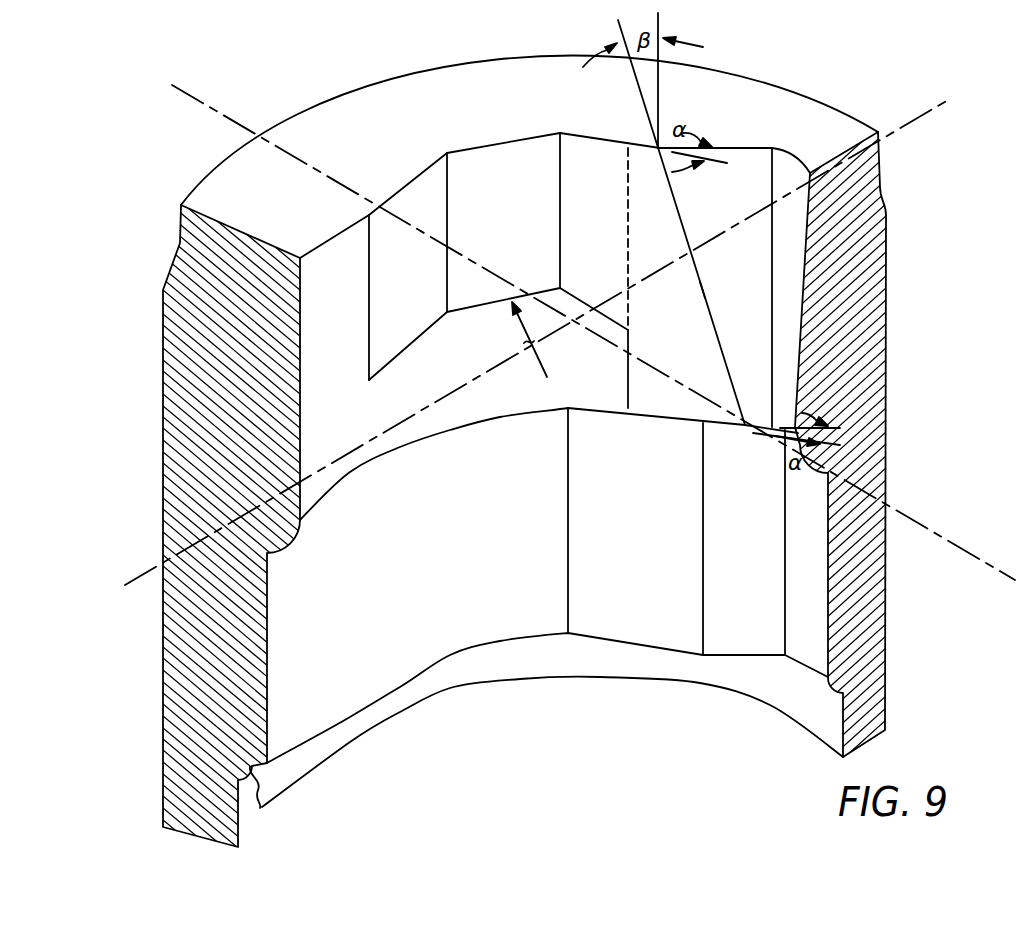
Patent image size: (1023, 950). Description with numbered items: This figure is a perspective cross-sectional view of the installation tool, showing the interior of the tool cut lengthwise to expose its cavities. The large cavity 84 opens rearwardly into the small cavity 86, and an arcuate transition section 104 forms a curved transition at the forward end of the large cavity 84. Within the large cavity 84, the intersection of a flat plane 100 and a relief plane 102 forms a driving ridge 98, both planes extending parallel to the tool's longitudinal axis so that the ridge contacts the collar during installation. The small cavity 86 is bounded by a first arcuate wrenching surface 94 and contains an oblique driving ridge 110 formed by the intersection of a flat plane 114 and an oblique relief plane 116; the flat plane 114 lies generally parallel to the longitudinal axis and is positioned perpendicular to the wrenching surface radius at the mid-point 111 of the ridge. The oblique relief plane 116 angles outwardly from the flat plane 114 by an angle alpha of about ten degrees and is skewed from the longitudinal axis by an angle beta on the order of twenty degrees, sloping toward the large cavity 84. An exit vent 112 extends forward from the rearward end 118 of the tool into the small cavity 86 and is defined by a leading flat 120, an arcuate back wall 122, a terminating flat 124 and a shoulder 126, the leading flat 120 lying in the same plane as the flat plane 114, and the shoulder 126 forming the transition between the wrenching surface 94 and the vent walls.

The large cavity 84 is at (436, 640).
The small cavity 86 is at (333, 262).
The first arcuate wrenching surface 94 is at (485, 408).
The driving ridge 98 is at (700, 638).
The flat plane 100 is at (638, 556).
The relief plane 102 is at (750, 562).
The arcuate transition section 104 is at (260, 808).
The oblique driving ridge 110 is at (683, 230).
The mid-point of the oblique driving ridge 111 is at (706, 293).
The exit vent 112 is at (543, 352).
The flat plane 114 is at (705, 362).
The oblique relief plane 116 is at (752, 268).
The rearward end 118 is at (785, 105).
The leading flat 120 is at (610, 228).
The arcuate back wall 122 is at (505, 228).
The terminating flat 124 is at (417, 278).
The shoulder 126 is at (449, 335).